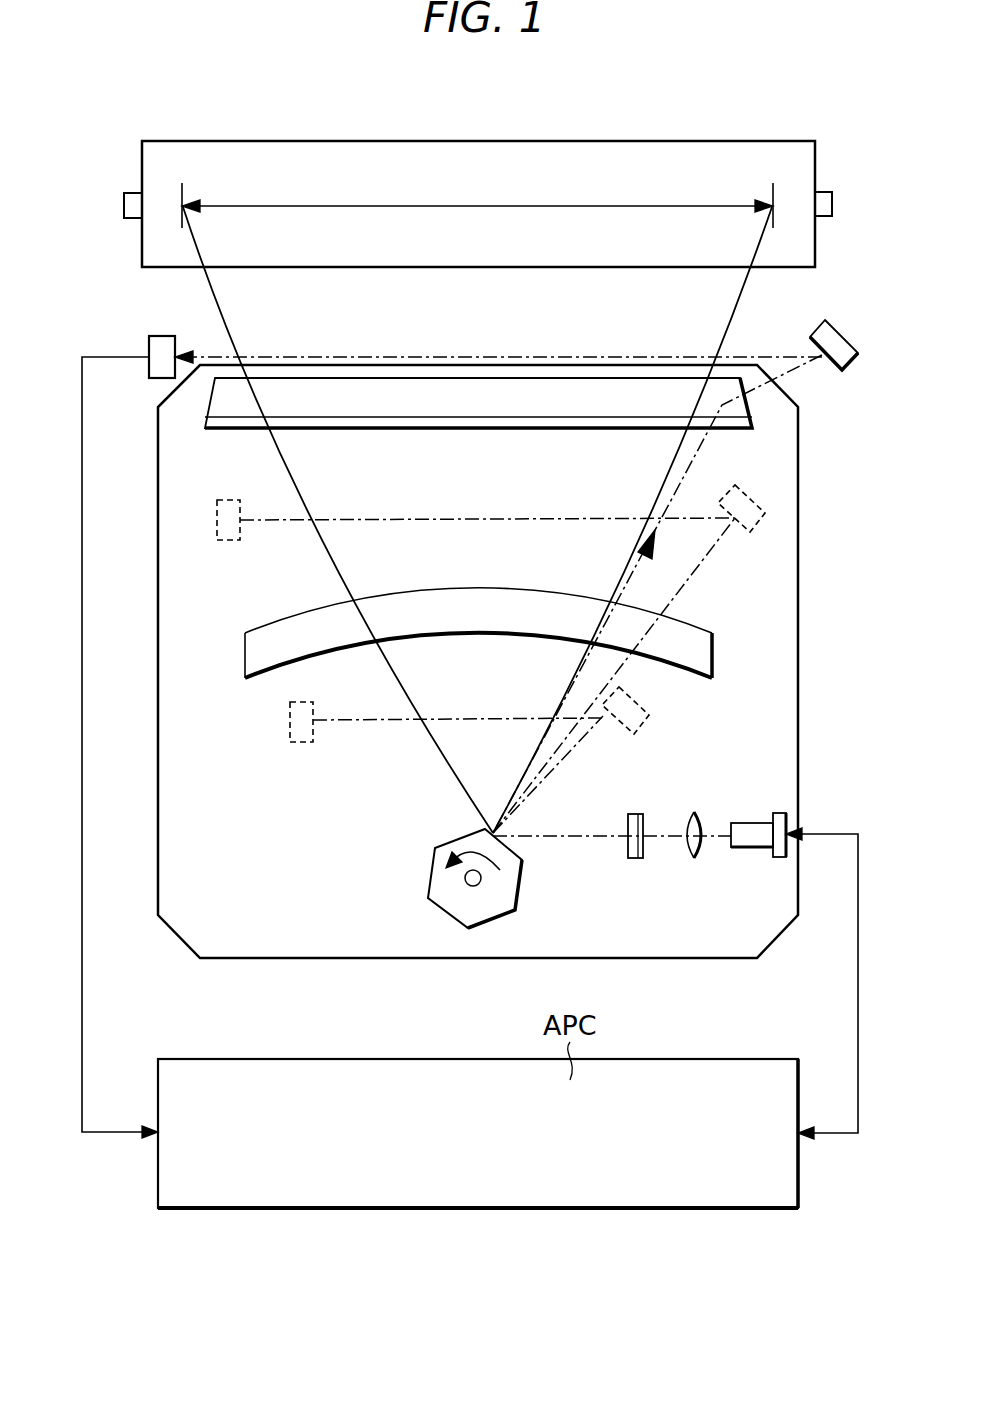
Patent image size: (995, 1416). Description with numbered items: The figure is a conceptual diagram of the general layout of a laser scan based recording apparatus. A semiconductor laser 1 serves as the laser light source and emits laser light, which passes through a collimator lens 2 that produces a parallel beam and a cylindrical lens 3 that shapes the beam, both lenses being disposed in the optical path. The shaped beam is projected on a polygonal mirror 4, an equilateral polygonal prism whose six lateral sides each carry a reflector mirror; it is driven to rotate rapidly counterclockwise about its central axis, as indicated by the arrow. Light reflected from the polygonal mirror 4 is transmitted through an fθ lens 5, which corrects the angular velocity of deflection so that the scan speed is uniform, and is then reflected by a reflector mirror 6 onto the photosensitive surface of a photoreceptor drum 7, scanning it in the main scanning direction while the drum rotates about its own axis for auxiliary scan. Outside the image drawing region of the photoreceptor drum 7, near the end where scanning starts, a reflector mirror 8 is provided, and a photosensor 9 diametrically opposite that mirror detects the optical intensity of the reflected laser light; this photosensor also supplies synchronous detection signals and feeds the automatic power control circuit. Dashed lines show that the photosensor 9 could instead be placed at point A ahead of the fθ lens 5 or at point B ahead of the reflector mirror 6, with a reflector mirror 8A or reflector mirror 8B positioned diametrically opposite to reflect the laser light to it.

The semiconductor laser 1 is at (752, 842).
The collimator lens 2 is at (694, 865).
The cylindrical lens 3 is at (637, 865).
The polygonal mirror 4 is at (490, 910).
The fθ lens 5 is at (693, 645).
The reflector mirror 6 is at (737, 405).
The photoreceptor drum 7 is at (802, 165).
The reflector mirror 8 is at (830, 342).
The reflector mirror 8A is at (648, 717).
The reflector mirror 8B is at (762, 513).
The photosensor 9 is at (153, 367).
The point A is at (292, 735).
The point B is at (218, 535).